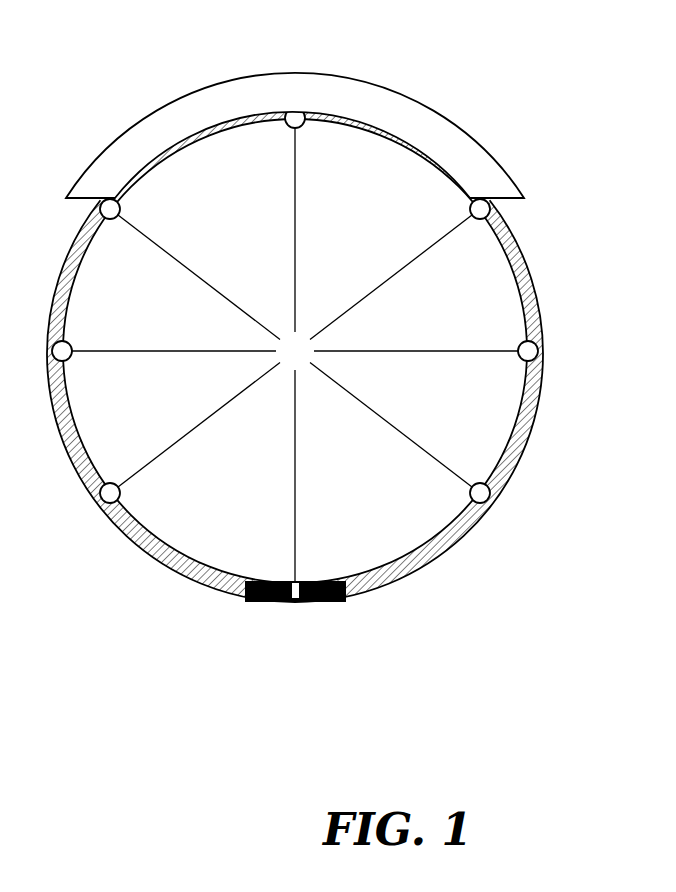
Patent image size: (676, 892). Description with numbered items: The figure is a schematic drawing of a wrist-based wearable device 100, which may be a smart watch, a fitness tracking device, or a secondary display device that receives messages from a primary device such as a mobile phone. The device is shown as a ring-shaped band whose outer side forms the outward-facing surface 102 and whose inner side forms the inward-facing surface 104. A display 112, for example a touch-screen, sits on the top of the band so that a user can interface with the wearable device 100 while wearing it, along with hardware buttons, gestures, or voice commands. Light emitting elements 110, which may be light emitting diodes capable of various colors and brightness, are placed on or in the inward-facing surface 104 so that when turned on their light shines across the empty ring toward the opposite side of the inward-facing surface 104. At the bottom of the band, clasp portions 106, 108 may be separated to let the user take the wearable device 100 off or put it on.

The wrist-based wearable device 100 is at (553, 78).
The outward-facing surface 102 is at (536, 278).
The inward-facing surface 104 is at (145, 533).
The clasp portion 106 is at (323, 582).
The clasp portion 108 is at (258, 603).
The light emitting elements 110 is at (295, 354).
The display 112 is at (312, 73).